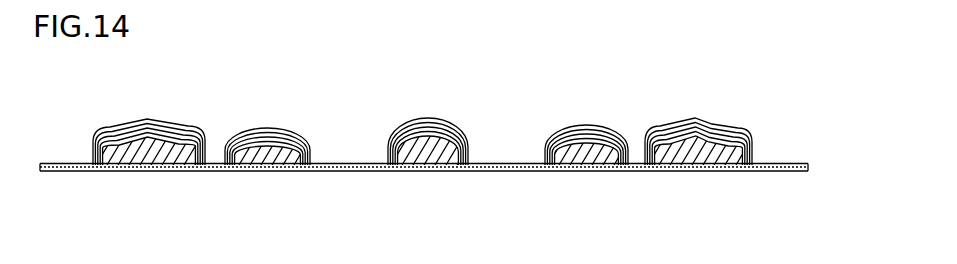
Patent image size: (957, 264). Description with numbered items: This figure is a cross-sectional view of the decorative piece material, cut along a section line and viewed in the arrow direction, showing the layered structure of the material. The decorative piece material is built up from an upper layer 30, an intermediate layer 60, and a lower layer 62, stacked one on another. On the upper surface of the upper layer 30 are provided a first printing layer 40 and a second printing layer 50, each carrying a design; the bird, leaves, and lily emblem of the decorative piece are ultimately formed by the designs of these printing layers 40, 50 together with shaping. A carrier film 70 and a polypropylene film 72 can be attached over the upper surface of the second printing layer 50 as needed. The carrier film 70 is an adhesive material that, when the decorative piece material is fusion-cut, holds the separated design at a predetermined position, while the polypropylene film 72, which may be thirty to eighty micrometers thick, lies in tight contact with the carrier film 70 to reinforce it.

The upper layer 30 is at (443, 129).
The first printing layer 40 is at (432, 128).
The second printing layer 50 is at (418, 126).
The intermediate layer 60 is at (593, 158).
The lower layer 62 is at (692, 167).
The carrier film 70 is at (790, 171).
The polypropylene film 72 is at (794, 163).